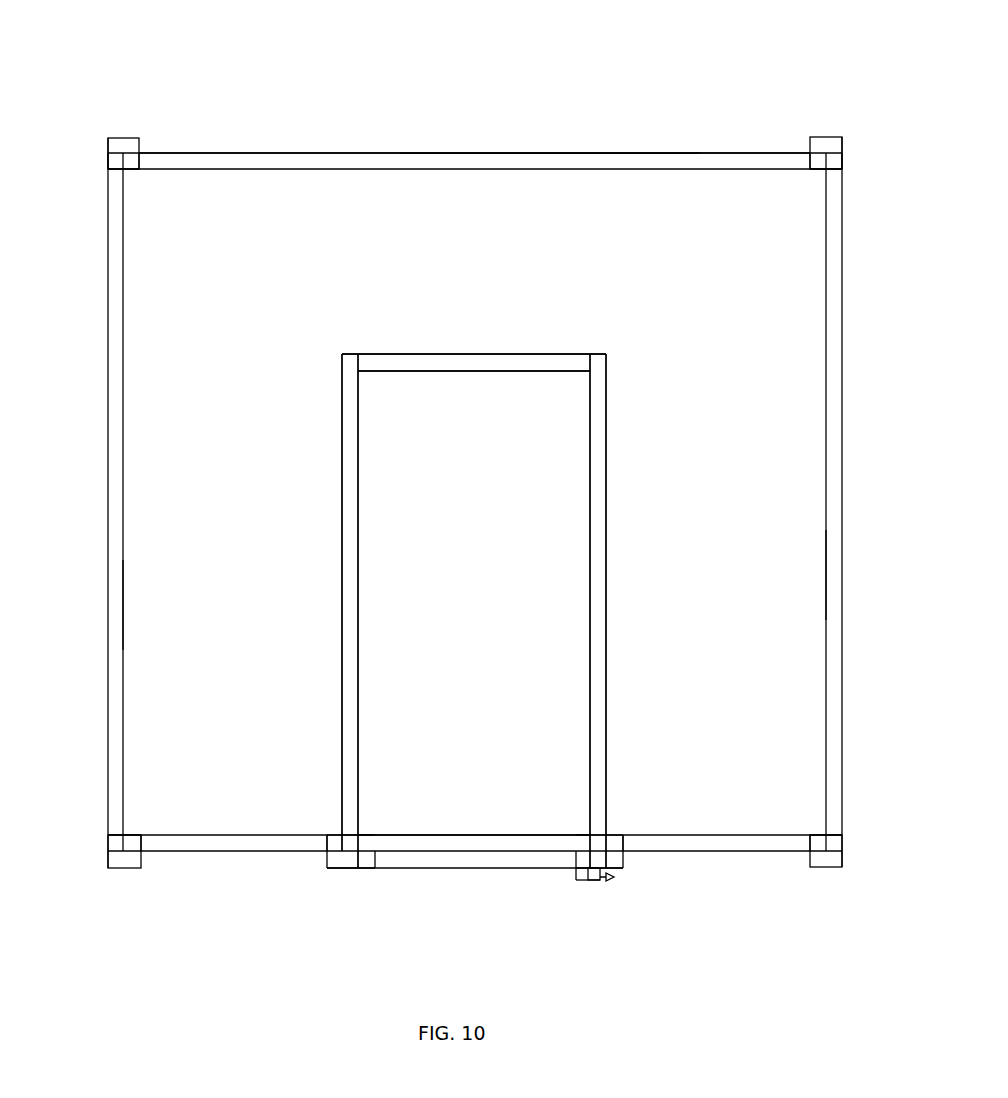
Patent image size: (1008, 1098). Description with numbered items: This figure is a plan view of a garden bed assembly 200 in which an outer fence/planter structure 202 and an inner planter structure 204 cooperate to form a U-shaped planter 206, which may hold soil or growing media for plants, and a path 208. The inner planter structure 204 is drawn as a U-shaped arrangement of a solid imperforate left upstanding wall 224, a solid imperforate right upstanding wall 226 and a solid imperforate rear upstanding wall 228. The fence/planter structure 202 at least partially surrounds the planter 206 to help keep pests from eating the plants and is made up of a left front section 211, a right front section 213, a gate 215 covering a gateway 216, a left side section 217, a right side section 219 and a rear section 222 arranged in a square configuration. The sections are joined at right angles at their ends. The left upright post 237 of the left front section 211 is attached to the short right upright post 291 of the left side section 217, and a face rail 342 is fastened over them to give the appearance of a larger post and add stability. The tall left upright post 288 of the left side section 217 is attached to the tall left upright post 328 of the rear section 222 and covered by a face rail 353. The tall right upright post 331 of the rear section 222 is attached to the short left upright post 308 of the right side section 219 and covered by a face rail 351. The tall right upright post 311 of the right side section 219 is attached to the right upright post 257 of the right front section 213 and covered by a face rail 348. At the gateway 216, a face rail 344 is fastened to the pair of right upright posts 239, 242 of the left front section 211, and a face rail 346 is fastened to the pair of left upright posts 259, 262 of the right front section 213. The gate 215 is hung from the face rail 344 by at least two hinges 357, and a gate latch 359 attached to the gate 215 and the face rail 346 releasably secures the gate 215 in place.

The garden bed assembly 200 is at (262, 92).
The outer fence/planter structure 202 is at (107, 402).
The inner planter structure 204 is at (607, 510).
The U-shaped planter 206 is at (400, 232).
The path 208 is at (557, 455).
The left front section 211 is at (215, 855).
The right front section 213 is at (705, 855).
The gate 215 is at (465, 870).
The gateway 216 is at (434, 838).
The left side section 217 is at (124, 603).
The right side section 219 is at (825, 572).
The rear section 222 is at (575, 152).
The left upstanding wall 224 is at (358, 697).
The right upstanding wall 226 is at (590, 760).
The rear upstanding wall 228 is at (497, 372).
The left upright post 237 is at (140, 836).
The right upright post 239 is at (330, 836).
The right upright post 242 is at (360, 836).
The right upright post 257 is at (810, 836).
The left upright post 259 is at (610, 836).
The left upright post 262 is at (592, 836).
The tall left upright post 288 is at (108, 170).
The short right upright post 291 is at (108, 837).
The short left upright post 308 is at (841, 170).
The tall right upright post 311 is at (843, 836).
The tall left upright post 328 is at (139, 170).
The tall right upright post 331 is at (810, 170).
The face rail 342 is at (123, 868).
The face rail 344 is at (330, 868).
The face rail 346 is at (623, 868).
The face rail 348 is at (822, 867).
The face rail 351 is at (823, 137).
The face rail 353 is at (125, 138).
The hinges 357 is at (355, 868).
The gate latch 359 is at (575, 881).